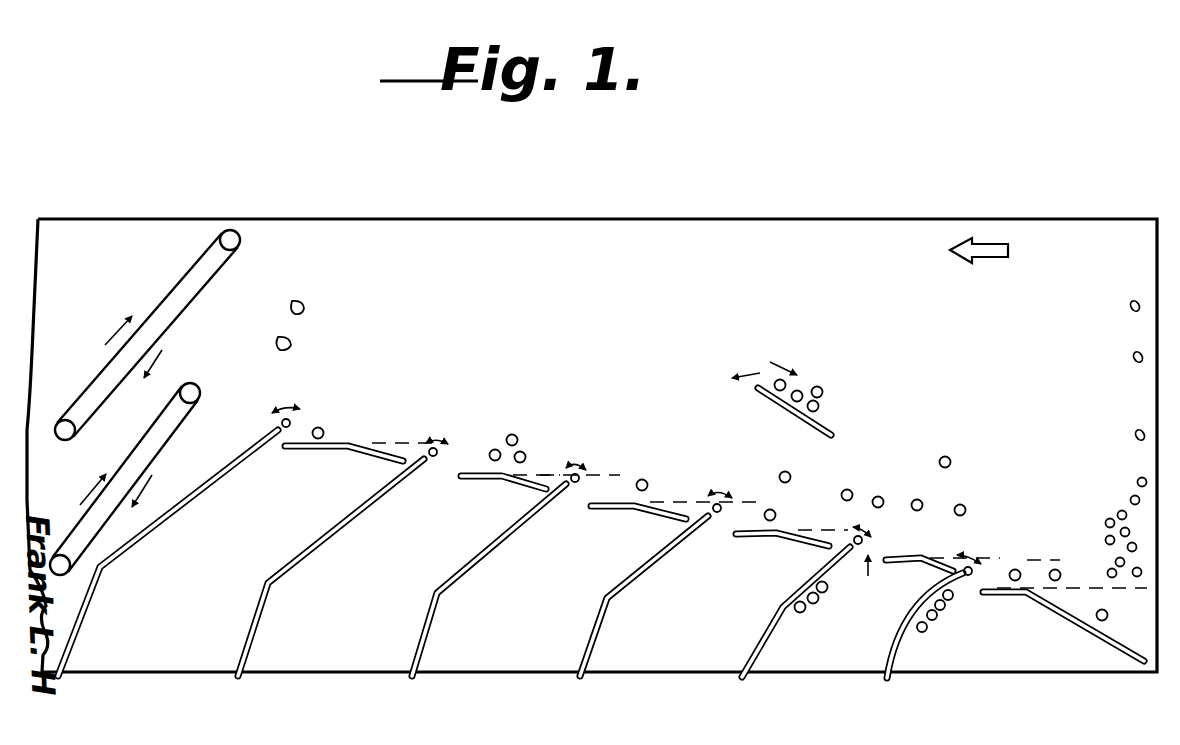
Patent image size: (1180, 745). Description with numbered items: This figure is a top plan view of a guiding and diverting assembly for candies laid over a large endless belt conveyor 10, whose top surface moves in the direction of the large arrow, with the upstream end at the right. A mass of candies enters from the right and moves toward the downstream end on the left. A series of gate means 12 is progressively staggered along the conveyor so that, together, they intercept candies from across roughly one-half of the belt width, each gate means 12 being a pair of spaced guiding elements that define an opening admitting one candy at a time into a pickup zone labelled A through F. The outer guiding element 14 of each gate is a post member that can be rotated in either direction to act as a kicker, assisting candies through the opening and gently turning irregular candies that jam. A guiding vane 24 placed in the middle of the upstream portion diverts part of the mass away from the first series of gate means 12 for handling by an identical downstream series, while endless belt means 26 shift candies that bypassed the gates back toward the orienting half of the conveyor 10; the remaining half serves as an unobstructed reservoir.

The endless belt conveyor 10 is at (1109, 206).
The gate means 12 is at (292, 432).
The outer guiding element 14 is at (294, 418).
The guiding vane 24 is at (825, 426).
The endless belt means 26 is at (177, 318).